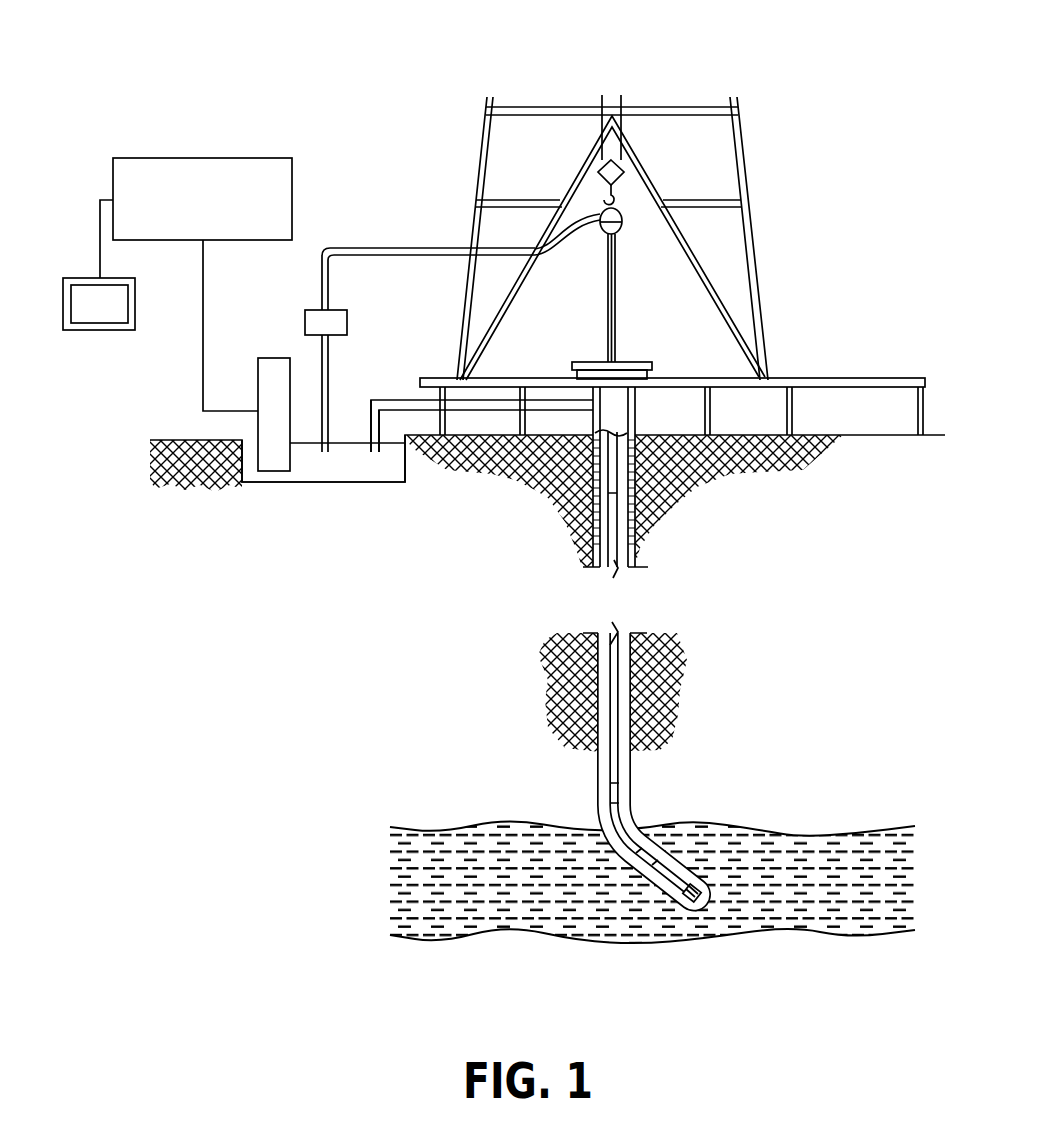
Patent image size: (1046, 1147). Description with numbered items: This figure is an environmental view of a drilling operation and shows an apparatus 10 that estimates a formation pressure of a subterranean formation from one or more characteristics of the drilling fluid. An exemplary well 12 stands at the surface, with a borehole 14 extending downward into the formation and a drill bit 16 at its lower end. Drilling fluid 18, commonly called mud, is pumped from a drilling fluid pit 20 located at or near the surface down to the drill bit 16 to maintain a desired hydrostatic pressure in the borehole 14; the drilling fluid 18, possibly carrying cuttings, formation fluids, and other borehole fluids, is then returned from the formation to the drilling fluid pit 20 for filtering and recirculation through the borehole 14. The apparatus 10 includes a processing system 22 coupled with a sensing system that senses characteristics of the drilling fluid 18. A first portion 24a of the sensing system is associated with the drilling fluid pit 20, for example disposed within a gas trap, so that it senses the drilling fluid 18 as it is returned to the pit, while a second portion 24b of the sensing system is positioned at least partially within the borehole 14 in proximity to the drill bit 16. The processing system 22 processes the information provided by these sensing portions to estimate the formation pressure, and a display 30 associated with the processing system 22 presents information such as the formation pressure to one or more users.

The apparatus 10 is at (391, 93).
The well 12 is at (813, 246).
The borehole 14 is at (634, 450).
The drill bit 16 is at (697, 888).
The drilling fluid 18 is at (600, 470).
The drilling fluid pit 20 is at (344, 472).
The processing system 22 is at (274, 165).
The first portion of the sensing system 24a is at (270, 368).
The second portion of the sensing system 24b is at (667, 887).
The display 30 is at (88, 310).